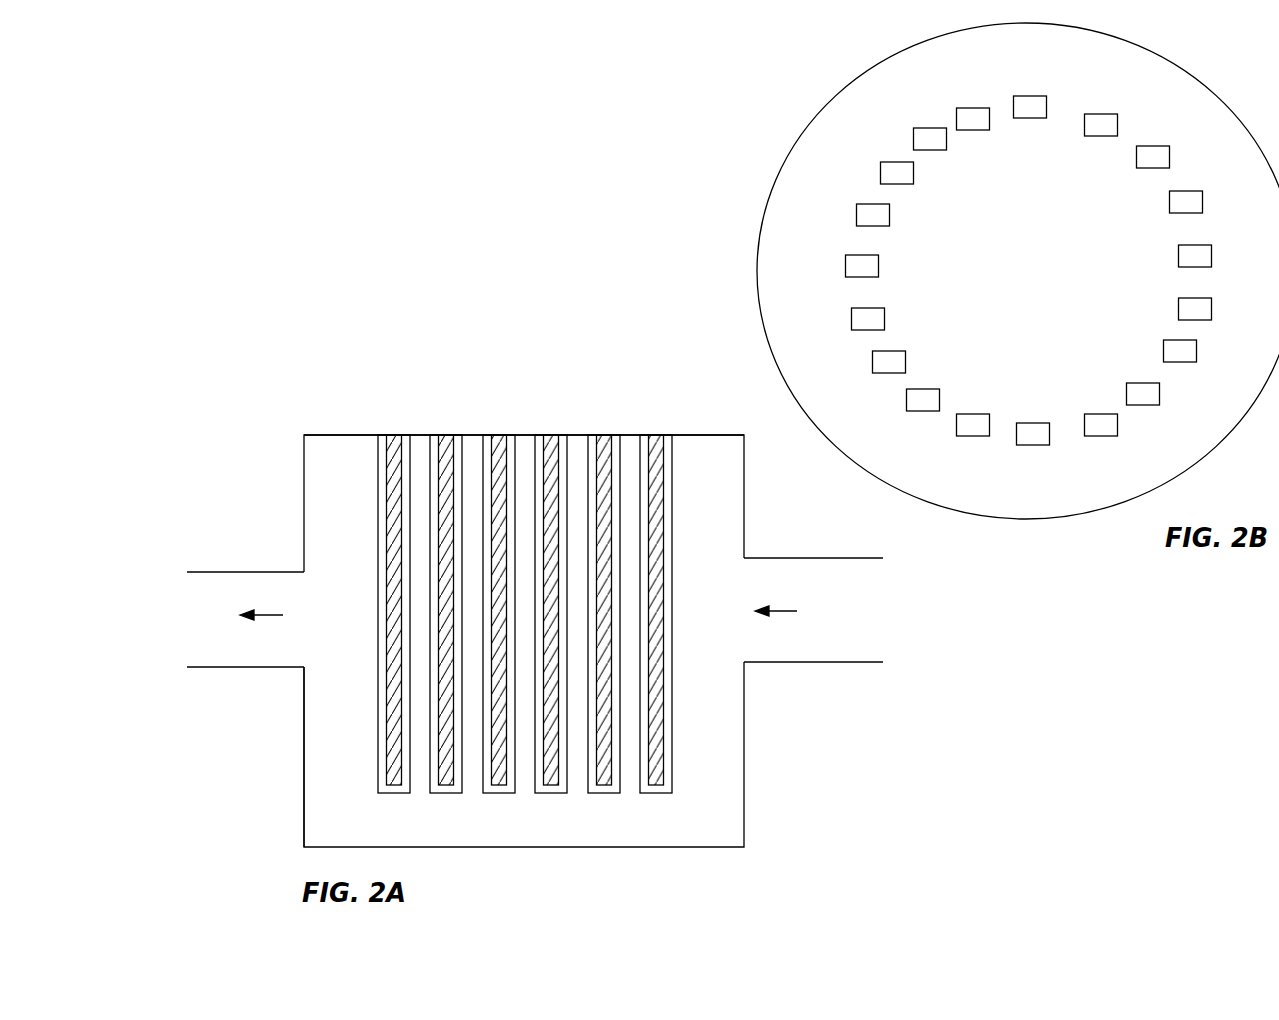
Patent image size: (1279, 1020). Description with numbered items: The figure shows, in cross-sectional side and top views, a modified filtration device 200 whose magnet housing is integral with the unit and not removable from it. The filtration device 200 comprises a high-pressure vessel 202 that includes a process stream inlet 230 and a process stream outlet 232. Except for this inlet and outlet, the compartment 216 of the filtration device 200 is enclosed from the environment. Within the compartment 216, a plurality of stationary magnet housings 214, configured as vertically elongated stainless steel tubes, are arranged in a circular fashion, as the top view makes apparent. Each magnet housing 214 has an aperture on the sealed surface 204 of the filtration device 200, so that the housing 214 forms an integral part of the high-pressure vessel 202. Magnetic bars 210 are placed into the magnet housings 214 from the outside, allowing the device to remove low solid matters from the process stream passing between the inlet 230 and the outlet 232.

In FIG. 2A, the filtration device 200 is at (458, 288).
In FIG. 2A, the high-pressure vessel 202 is at (700, 435).
In FIG. 2B, the high-pressure vessel 202 is at (757, 256).
In FIG. 2A, the sealed surface 204 is at (342, 435).
In FIG. 2A, the magnetic bars 210 is at (661, 720).
In FIG. 2B, the magnetic bars 210 is at (1101, 437).
In FIG. 2A, the magnet housing 214 is at (672, 779).
In FIG. 2A, the compartment 216 is at (341, 682).
In FIG. 2A, the process stream inlet 230 is at (785, 558).
In FIG. 2A, the process stream outlet 232 is at (238, 572).